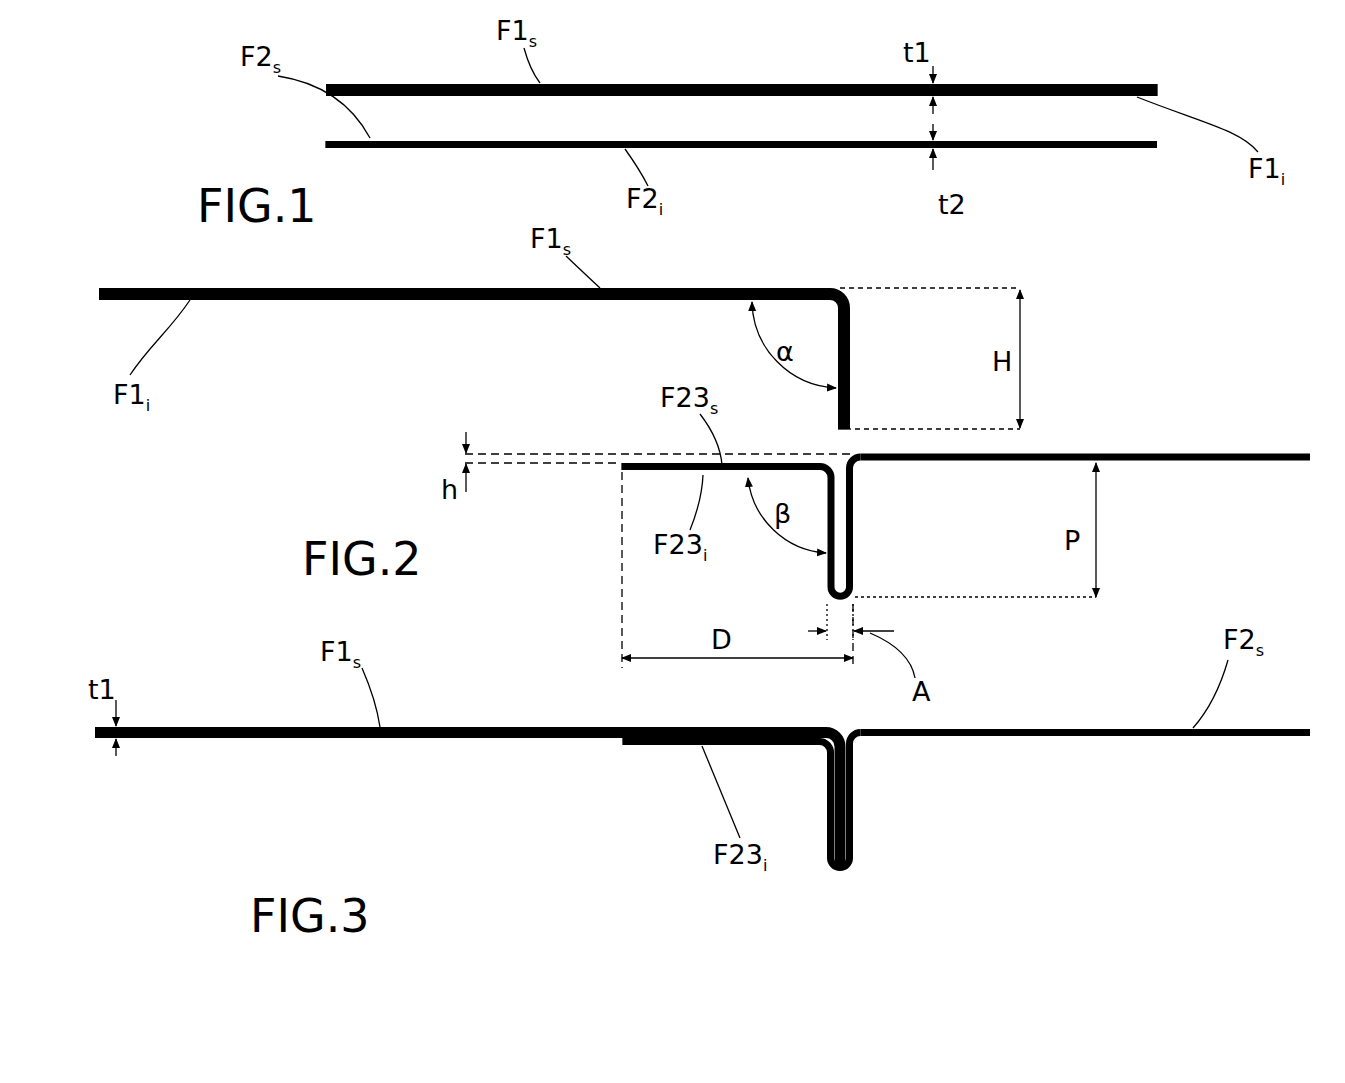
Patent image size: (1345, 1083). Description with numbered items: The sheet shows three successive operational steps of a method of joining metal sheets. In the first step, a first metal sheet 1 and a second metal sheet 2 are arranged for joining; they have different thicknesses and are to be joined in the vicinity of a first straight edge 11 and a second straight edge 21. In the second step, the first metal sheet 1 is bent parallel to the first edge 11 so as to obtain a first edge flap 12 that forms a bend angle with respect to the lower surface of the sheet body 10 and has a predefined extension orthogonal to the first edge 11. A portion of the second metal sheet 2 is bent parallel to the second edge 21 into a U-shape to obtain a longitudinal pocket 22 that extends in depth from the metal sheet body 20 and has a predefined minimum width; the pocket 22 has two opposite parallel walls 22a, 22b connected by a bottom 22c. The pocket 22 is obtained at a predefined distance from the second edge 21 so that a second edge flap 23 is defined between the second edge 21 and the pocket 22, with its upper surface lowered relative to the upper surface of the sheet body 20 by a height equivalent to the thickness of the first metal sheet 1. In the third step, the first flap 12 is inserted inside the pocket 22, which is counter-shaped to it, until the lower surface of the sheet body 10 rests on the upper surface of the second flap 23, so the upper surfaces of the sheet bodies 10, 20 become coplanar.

In FIG. 1, the first metal sheet 1 is at (1207, 86).
In FIG. 2, the first metal sheet 1 is at (807, 272).
In FIG. 3, the first metal sheet 1 is at (190, 665).
In FIG. 1, the second metal sheet 2 is at (1181, 147).
In FIG. 2, the second metal sheet 2 is at (1177, 448).
In FIG. 3, the second metal sheet 2 is at (1131, 753).
In FIG. 2, the sheet body 10 is at (427, 287).
In FIG. 3, the sheet body 10 is at (480, 727).
In FIG. 1, the first straight edge 11 is at (1156, 89).
In FIG. 2, the first straight edge 11 is at (836, 432).
In FIG. 3, the first straight edge 11 is at (843, 873).
In FIG. 2, the first edge flap 12 is at (856, 362).
In FIG. 3, the first edge flap 12 is at (841, 808).
In FIG. 2, the metal sheet body 20 is at (1238, 462).
In FIG. 3, the metal sheet body 20 is at (1040, 727).
In FIG. 1, the second straight edge 21 is at (322, 144).
In FIG. 2, the second straight edge 21 is at (620, 470).
In FIG. 3, the second straight edge 21 is at (621, 744).
In FIG. 2, the longitudinal pocket 22 is at (868, 555).
In FIG. 3, the longitudinal pocket 22 is at (824, 873).
In FIG. 2, the wall 22a is at (828, 560).
In FIG. 2, the wall 22b is at (856, 527).
In FIG. 3, the wall 22b is at (855, 796).
In FIG. 2, the bottom 22c is at (856, 603).
In FIG. 3, the bottom 22c is at (840, 863).
In FIG. 2, the second edge flap 23 is at (654, 461).
In FIG. 3, the second edge flap 23 is at (665, 746).